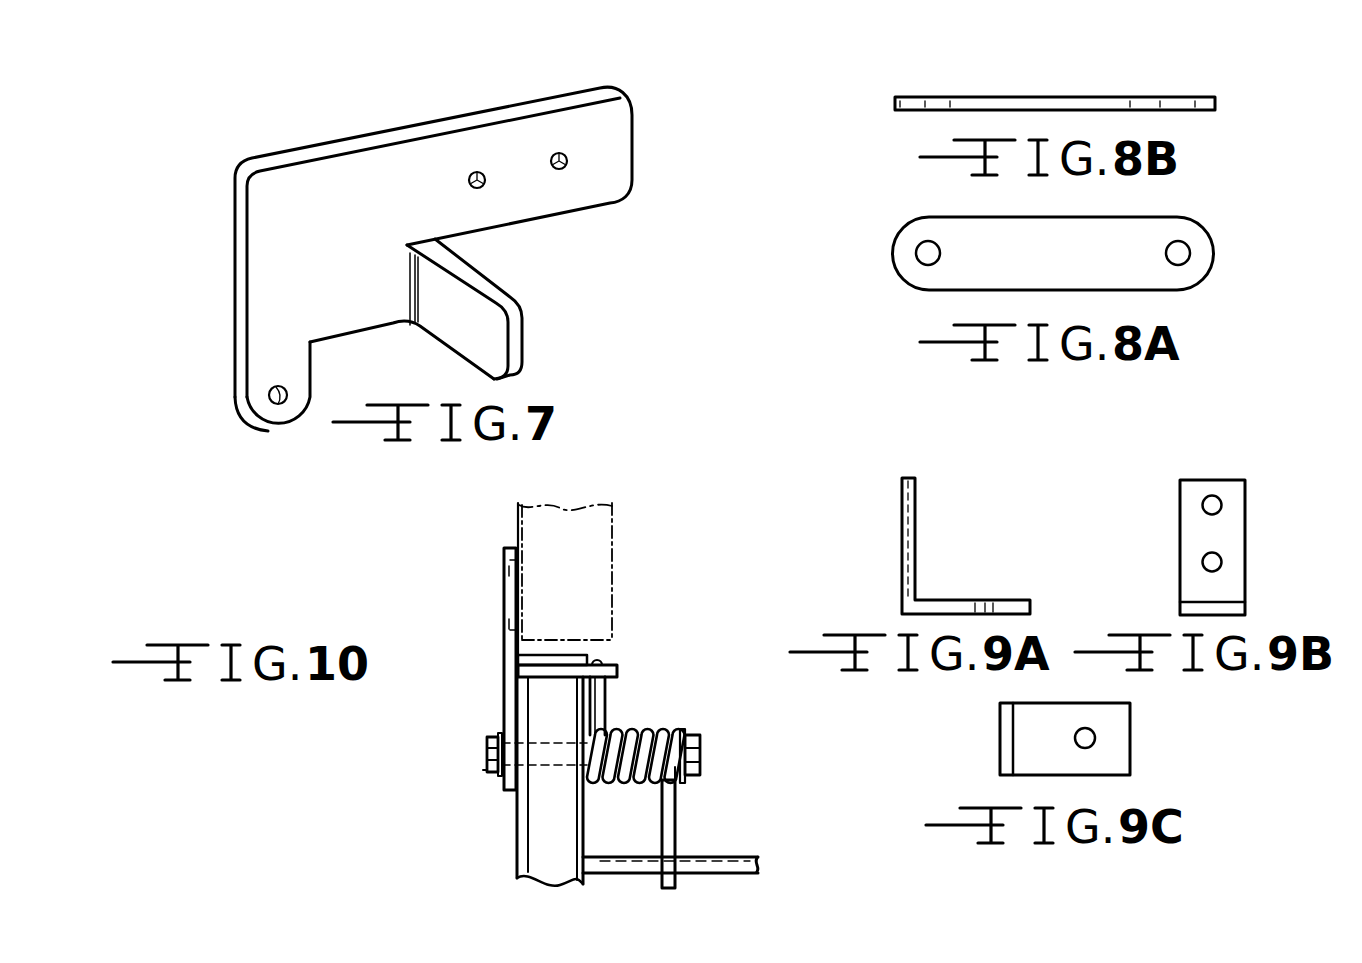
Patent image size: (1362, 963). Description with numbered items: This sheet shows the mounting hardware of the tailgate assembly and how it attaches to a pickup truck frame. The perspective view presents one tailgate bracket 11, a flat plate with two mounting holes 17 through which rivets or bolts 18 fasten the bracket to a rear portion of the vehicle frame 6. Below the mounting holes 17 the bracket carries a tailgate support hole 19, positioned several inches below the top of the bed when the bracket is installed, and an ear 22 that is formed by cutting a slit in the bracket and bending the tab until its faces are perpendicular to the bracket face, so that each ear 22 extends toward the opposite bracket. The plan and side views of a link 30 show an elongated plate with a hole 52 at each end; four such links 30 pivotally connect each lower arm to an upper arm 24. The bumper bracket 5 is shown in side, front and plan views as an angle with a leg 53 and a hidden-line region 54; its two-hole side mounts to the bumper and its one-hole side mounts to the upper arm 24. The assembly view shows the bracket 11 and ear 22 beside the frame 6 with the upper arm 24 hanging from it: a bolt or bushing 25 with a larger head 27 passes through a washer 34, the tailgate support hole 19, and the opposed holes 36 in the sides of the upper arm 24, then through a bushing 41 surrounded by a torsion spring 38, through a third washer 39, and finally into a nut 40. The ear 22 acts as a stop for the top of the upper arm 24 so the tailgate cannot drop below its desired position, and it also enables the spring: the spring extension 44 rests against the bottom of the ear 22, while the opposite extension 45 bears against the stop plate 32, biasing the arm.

In FIG. 9A, the bumper bracket 5 is at (915, 533).
In FIG. 9B, the bumper bracket 5 is at (1225, 528).
In FIG. 9C, the bumper bracket 5 is at (1115, 757).
In FIG. 10, the frame 6 is at (593, 568).
In FIG. 7, the tailgate bracket 11 is at (380, 182).
In FIG. 10, the tailgate bracket 11 is at (504, 598).
In FIG. 7, the mounting holes 17 is at (485, 182).
In FIG. 10, the rivets or bolts 18 is at (504, 570).
In FIG. 7, the tailgate support hole 19 is at (270, 397).
In FIG. 7, the ear 22 is at (522, 307).
In FIG. 10, the ear 22 is at (610, 670).
In FIG. 10, the upper arm 24 is at (543, 837).
In FIG. 10, the bolt or bushing 25 is at (484, 768).
In FIG. 10, the head 27 is at (487, 755).
In FIG. 8B, the link 30 is at (1067, 102).
In FIG. 8A, the link 30 is at (1130, 260).
In FIG. 10, the stop plate 32 is at (730, 867).
In FIG. 10, the washer 34 is at (498, 733).
In FIG. 10, the holes 36 is at (528, 740).
In FIG. 10, the torsion spring 38 is at (637, 724).
In FIG. 10, the third washer 39 is at (678, 737).
In FIG. 10, the nut 40 is at (698, 753).
In FIG. 10, the bushing 41 is at (675, 767).
In FIG. 10, the extension 44 is at (597, 703).
In FIG. 10, the extension 45 is at (667, 823).
In FIG. 8A, the holes 52 is at (918, 250).
In FIG. 9A, the bracket leg 53 is at (902, 563).
In FIG. 9A, the slot 54 is at (982, 603).